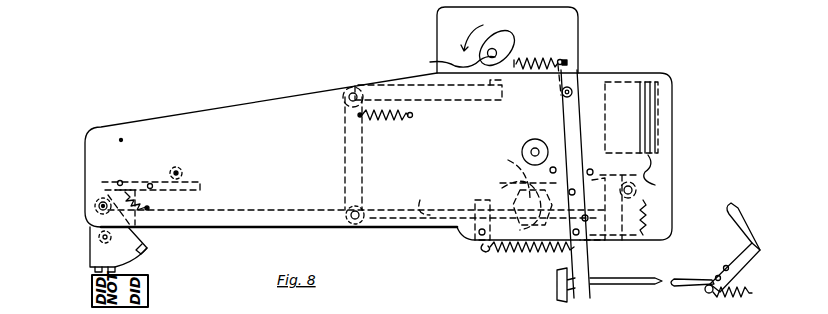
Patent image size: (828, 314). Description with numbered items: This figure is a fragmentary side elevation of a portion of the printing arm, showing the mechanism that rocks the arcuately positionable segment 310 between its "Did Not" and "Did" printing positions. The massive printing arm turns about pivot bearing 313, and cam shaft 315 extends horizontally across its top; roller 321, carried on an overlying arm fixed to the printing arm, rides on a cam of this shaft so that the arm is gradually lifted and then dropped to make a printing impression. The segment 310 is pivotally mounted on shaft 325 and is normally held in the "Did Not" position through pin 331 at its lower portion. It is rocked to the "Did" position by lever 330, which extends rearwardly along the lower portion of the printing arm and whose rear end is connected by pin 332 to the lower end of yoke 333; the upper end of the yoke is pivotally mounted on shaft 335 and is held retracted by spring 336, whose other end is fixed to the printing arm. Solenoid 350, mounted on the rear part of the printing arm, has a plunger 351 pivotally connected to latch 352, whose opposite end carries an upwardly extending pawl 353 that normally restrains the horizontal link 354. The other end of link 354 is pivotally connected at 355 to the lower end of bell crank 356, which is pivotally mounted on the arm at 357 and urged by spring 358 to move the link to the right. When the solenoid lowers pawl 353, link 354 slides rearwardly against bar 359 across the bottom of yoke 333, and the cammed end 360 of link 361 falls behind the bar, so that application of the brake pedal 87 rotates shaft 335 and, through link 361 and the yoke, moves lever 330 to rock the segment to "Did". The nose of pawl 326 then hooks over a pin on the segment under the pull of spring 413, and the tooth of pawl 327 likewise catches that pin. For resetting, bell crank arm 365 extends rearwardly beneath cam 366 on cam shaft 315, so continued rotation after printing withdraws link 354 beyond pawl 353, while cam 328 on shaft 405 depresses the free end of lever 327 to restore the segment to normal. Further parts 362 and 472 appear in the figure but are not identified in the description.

The brake pedal 87 is at (727, 220).
The arcuately positionable segment 310 is at (90, 255).
The pivot bearing 313 is at (530, 140).
The cam shaft 315 is at (446, 57).
The roller 321 is at (505, 310).
The shaft 325 is at (99, 207).
The pawl 326 is at (103, 185).
The pawl 327 is at (135, 180).
The cam 328 is at (182, 172).
The lever 330 is at (209, 211).
The pin 331 is at (99, 238).
The pin 332 is at (588, 218).
The yoke 333 is at (592, 176).
The shaft 335 is at (577, 86).
The spring 336 is at (556, 58).
The solenoid 350 is at (648, 80).
The plunger 351 is at (660, 170).
The latch 352 is at (618, 238).
The pawl 353 is at (486, 252).
The horizontal link 354 is at (420, 210).
The pivot 355 is at (348, 212).
The bell crank 356 is at (345, 150).
The pivot 357 is at (353, 93).
The spring 358 is at (394, 118).
The bar 359 is at (475, 202).
The cammed end 360 is at (500, 183).
The link 361 is at (501, 173).
The spring 362 is at (515, 255).
The arm 365 is at (445, 102).
The cam 366 is at (507, 35).
The shaft 405 is at (175, 172).
The spring 413 is at (150, 201).
The bushing 472 is at (98, 200).